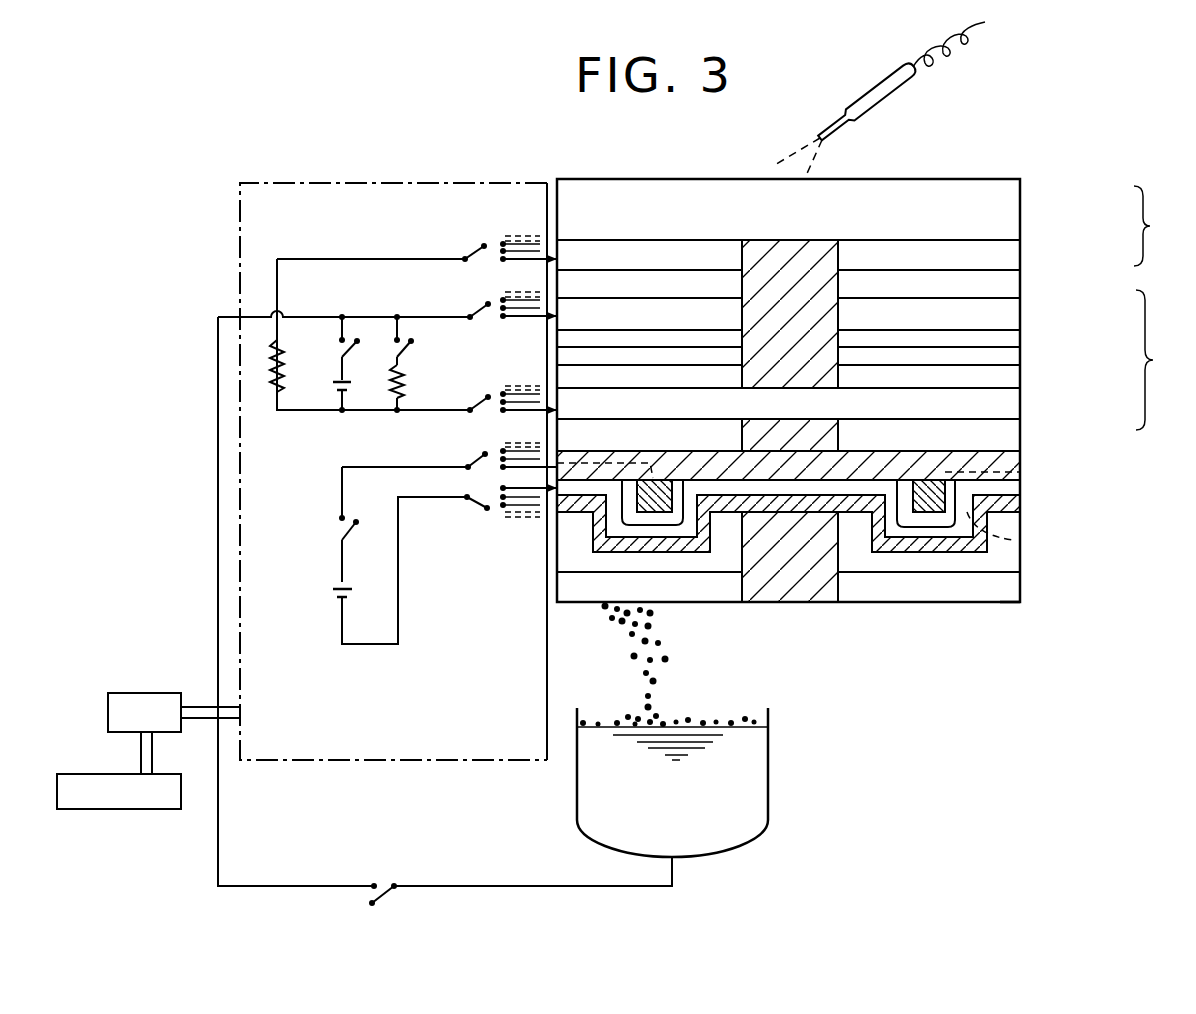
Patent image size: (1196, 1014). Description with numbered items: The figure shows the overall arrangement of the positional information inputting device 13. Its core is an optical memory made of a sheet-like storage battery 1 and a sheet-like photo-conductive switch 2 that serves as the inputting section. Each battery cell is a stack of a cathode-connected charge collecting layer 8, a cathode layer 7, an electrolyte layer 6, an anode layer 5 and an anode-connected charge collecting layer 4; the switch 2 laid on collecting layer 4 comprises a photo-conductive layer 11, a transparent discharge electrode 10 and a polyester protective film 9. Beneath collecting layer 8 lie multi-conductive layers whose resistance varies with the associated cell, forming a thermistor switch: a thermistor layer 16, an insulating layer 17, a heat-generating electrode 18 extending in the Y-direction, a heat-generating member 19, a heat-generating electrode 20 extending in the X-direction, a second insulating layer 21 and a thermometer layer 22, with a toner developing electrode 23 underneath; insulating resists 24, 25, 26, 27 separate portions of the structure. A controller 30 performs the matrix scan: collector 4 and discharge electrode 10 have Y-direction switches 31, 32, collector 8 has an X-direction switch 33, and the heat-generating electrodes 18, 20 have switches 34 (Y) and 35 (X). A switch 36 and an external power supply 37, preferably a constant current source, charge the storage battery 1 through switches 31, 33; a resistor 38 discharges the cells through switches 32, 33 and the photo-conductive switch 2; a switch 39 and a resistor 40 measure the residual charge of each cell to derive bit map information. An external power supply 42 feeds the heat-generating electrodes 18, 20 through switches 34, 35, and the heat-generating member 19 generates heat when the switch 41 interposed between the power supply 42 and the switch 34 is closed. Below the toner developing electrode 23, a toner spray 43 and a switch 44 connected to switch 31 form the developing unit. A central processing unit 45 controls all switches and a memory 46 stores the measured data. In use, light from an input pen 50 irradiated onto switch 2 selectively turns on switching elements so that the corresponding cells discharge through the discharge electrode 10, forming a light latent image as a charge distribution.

The storage battery 1 is at (1156, 360).
The photo-conductive switch 2 is at (1154, 226).
The anode-connected charge collecting layer 4 is at (1013, 311).
The anode layer 5 is at (1013, 335).
The electrolyte layer 6 is at (1013, 356).
The cathode layer 7 is at (1013, 376).
The cathode-connected charge collecting layer 8 is at (1013, 404).
The protective film 9 is at (1013, 198).
The discharge electrode 10 is at (1013, 250).
The photo-conductive layer 11 is at (1013, 280).
The semiconductor device 13 is at (1000, 160).
The thermistor layer 16 is at (1013, 432).
The insulating layer 17 is at (1013, 458).
The heat-generating electrode 18 is at (1013, 467).
The heat-generating member 19 is at (1013, 486).
The heat-generating electrode 20 is at (1013, 519).
The insulating layer 21 is at (1013, 545).
The thermometer layer 22 is at (1013, 560).
The toner developing electrode 23 is at (1011, 584).
The insulating resist 24 is at (770, 240).
The insulating resist 25 is at (817, 440).
The insulating resist 26 is at (817, 557).
The insulating resist 27 is at (778, 590).
The controller 30 is at (365, 182).
The switch 31 is at (480, 308).
The switch 32 is at (478, 251).
The switch 33 is at (476, 400).
The switch 34 is at (472, 458).
The switch 35 is at (484, 508).
The switch 36 is at (342, 347).
The external power supply 37 is at (340, 384).
The resistor 38 is at (272, 378).
The switch 39 is at (404, 353).
The resistor 40 is at (403, 380).
The switch 41 is at (338, 531).
The external power supply 42 is at (342, 580).
The toner spray 43 is at (770, 825).
The switch 44 is at (384, 881).
The central processing unit 45 is at (160, 693).
The memory 46 is at (181, 801).
The input pen 50 is at (866, 96).